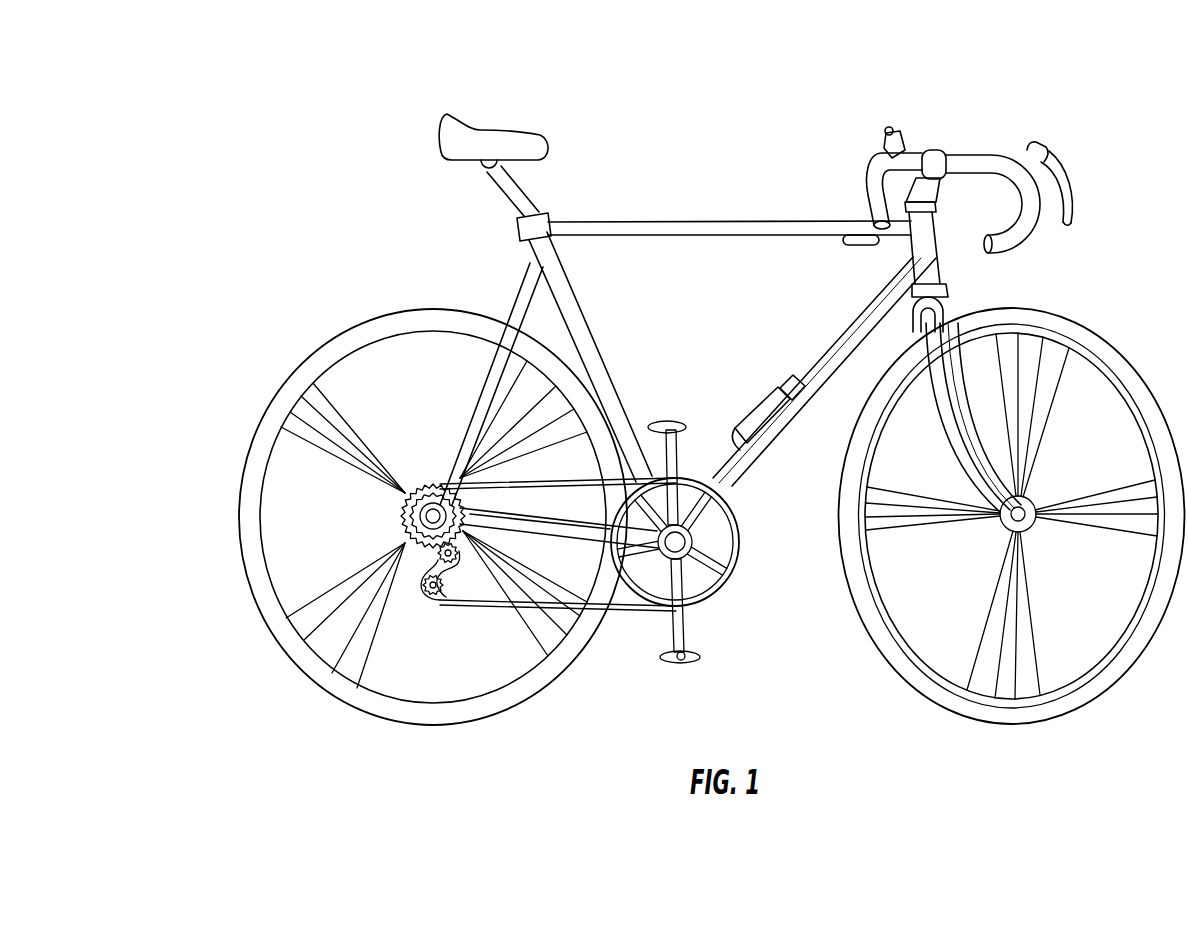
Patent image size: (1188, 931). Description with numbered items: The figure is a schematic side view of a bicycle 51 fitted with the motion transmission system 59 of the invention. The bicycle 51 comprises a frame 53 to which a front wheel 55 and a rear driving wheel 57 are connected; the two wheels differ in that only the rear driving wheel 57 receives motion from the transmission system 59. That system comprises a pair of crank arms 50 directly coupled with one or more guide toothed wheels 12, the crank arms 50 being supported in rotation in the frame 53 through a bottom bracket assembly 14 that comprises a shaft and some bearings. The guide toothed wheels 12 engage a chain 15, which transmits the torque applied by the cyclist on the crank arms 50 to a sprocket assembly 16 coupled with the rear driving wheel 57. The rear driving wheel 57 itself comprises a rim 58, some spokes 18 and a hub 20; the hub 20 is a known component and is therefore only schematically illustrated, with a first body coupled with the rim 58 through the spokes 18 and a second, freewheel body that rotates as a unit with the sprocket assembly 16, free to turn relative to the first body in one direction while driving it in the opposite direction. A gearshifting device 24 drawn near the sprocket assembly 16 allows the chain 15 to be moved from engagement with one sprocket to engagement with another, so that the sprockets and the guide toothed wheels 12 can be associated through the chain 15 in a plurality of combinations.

The bicycle 51 is at (352, 100).
The frame 53 is at (736, 223).
The front wheel 55 is at (1137, 388).
The rear driving wheel 57 is at (285, 401).
The rim 58 is at (283, 447).
The hub 20 is at (374, 398).
The spokes 18 is at (307, 611).
The sprocket assembly 16 is at (318, 678).
The gearshifting device 24 is at (410, 596).
The chain 15 is at (566, 606).
The crank arms 50 is at (672, 438).
The guide toothed wheels 12 is at (737, 566).
The bottom bracket assembly 14 is at (687, 565).
The motion transmission system 59 is at (727, 658).